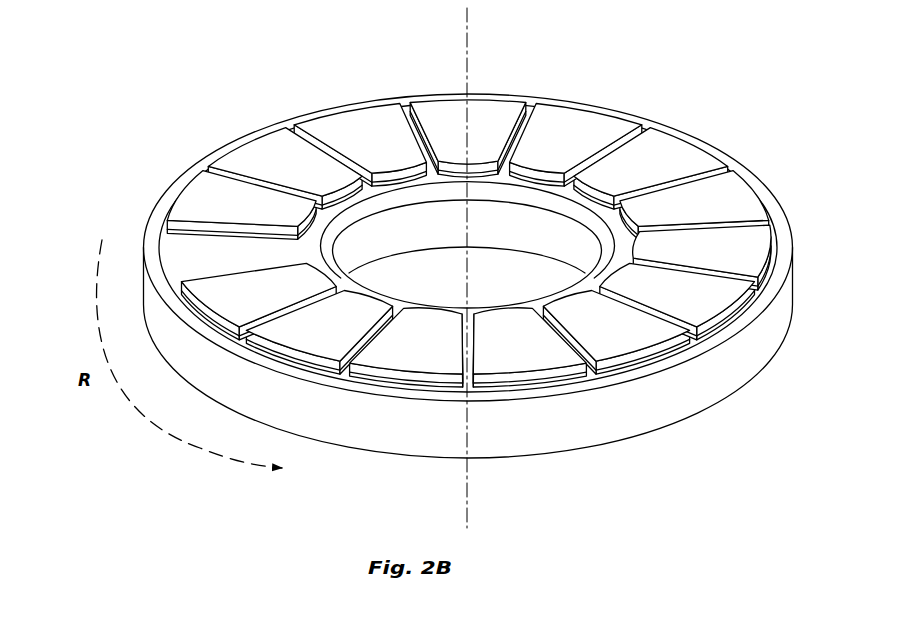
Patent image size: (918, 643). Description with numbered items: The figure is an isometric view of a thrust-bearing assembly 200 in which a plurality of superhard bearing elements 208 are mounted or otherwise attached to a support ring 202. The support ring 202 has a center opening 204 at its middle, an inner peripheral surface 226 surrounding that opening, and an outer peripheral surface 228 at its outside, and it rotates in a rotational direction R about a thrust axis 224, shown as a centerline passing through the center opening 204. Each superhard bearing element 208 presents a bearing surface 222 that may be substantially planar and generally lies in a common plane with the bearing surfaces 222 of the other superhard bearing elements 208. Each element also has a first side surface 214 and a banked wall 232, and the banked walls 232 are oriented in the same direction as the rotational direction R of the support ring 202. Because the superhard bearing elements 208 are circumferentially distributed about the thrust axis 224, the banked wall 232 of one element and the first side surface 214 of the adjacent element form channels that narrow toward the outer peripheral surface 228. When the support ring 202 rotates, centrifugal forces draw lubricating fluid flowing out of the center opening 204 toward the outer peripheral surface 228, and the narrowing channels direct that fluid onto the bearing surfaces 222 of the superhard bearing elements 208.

The thrust-bearing assembly 200 is at (443, 267).
The support ring 202 is at (477, 285).
The center opening 204 is at (640, 426).
The superhard bearing element 208 is at (469, 253).
The first side surface 214 is at (247, 143).
The bearing surface 222 is at (347, 118).
The thrust axis 224 is at (466, 44).
The inner peripheral surface 226 is at (393, 250).
The outer peripheral surface 228 is at (748, 357).
The banked wall 232 is at (347, 153).